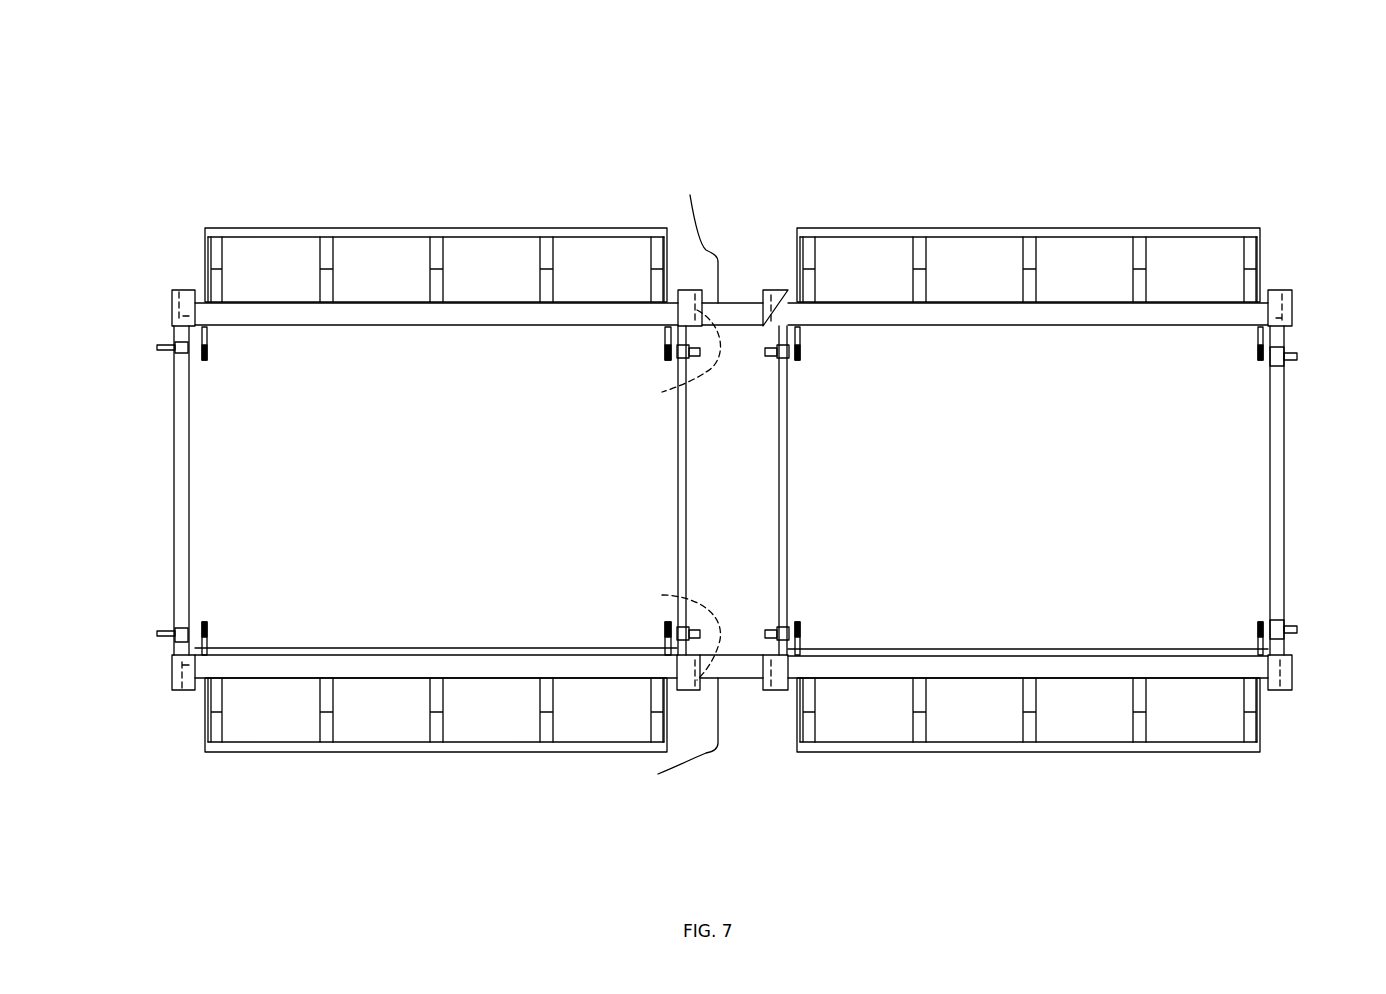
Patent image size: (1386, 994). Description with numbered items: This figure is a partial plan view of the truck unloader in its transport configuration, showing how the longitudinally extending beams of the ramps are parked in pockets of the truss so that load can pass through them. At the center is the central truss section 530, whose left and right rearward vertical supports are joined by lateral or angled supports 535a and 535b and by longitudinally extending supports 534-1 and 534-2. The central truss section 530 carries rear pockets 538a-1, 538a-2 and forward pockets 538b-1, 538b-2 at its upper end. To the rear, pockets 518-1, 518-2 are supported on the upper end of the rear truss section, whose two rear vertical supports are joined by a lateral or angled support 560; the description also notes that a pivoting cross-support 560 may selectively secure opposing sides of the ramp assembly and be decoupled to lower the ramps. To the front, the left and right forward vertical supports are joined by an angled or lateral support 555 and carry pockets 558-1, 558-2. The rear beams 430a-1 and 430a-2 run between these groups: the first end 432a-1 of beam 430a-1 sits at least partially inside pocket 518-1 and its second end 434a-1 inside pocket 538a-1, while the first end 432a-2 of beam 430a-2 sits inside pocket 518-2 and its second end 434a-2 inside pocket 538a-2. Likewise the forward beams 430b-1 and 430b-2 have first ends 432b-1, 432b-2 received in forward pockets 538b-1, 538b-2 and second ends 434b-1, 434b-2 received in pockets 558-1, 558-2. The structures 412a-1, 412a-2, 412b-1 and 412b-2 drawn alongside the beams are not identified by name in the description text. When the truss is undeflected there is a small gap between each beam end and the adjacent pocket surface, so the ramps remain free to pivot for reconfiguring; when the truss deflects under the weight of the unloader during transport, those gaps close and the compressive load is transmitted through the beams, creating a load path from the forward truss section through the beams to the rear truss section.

The central truss section 530 is at (740, 107).
The first upper panel 412a-1 is at (428, 146).
The first lower panel 412a-2 is at (403, 782).
The second upper panel 412b-1 is at (1031, 146).
The second lower panel 412b-2 is at (1007, 782).
The beam 430a-1 is at (497, 301).
The beam 430a-2 is at (400, 679).
The beam 430b-1 is at (932, 301).
The beam 430b-2 is at (982, 679).
The first end of beam 432a-1 is at (179, 300).
The first end of beam 432a-2 is at (182, 690).
The first end of beam 432b-1 is at (773, 300).
The first end of beam 432b-2 is at (775, 690).
The second end of beam 434a-1 is at (657, 355).
The second end of beam 434a-2 is at (656, 627).
The second end of beam 434b-1 is at (1282, 300).
The second end of beam 434b-2 is at (1280, 692).
The pocket 518-1 is at (163, 310).
The pocket 518-2 is at (172, 692).
The longitudinally extending support 534-1 is at (695, 302).
The longitudinally extending support 534-2 is at (695, 690).
The lateral or angled support 535a is at (688, 490).
The lateral or angled support 535b is at (787, 490).
The rear pocket 538a-1 is at (688, 290).
The rear pocket 538a-2 is at (688, 692).
The forward pocket 538b-1 is at (762, 302).
The forward pocket 538b-2 is at (765, 692).
The angled or lateral support 555 is at (1282, 512).
The pocket 558-1 is at (1300, 310).
The pocket 558-2 is at (1290, 692).
The lateral or angled support 560 is at (190, 510).